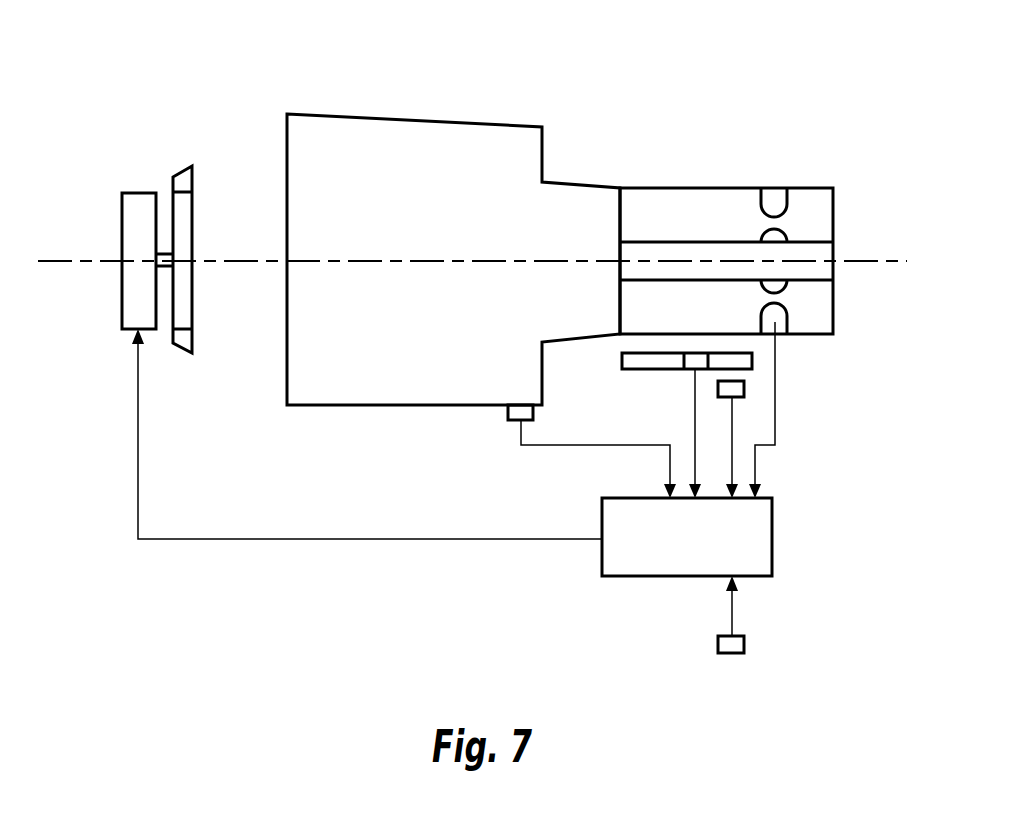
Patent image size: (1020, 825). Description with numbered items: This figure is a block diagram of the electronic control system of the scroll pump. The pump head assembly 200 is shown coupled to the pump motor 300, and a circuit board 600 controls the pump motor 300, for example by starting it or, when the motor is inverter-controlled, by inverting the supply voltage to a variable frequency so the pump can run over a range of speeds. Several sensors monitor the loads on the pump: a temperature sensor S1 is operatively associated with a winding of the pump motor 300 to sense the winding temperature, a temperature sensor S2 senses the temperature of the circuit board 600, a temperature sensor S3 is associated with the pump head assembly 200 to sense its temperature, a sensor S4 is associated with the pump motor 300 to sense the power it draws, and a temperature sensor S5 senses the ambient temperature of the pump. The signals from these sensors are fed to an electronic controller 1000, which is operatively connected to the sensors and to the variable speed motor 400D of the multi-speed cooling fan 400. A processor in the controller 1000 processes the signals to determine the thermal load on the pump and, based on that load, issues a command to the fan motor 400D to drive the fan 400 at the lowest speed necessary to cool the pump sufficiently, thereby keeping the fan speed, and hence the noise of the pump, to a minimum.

The pump head assembly 200 is at (433, 98).
The pump motor 300 is at (730, 186).
The multi-speed cooling fan 400 is at (119, 241).
The variable speed motor 400D is at (130, 298).
The circuit board 600 is at (633, 372).
The electronic controller 1000 is at (775, 533).
The temperature sensor S1 is at (778, 318).
The temperature sensor S2 is at (735, 388).
The temperature sensor S3 is at (532, 413).
The sensor S4 is at (688, 362).
The temperature sensor S5 is at (737, 647).